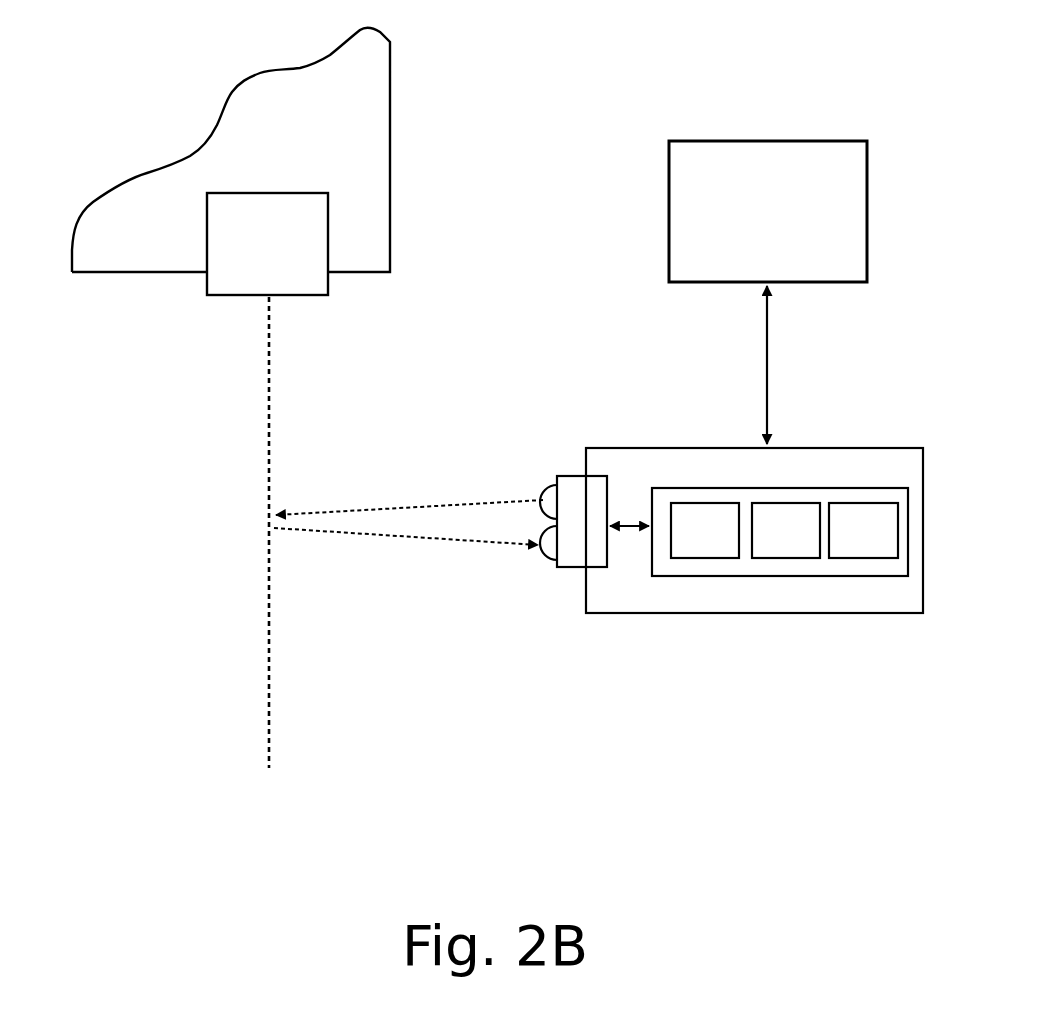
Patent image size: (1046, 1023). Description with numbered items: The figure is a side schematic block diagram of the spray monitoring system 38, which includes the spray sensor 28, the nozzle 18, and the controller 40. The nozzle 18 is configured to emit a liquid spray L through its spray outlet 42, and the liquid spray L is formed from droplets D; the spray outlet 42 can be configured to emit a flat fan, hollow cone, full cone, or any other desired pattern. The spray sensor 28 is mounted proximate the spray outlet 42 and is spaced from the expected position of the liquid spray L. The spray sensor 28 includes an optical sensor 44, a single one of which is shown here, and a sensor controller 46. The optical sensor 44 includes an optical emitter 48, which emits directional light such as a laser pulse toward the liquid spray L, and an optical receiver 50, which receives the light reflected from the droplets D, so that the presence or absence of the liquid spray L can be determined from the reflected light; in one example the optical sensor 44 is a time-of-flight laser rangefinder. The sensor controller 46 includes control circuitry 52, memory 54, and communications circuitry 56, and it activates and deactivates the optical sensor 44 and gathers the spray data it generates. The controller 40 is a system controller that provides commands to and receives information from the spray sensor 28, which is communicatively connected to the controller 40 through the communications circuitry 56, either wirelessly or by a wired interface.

The nozzle 18 is at (390, 72).
The spray outlet 42 is at (283, 252).
The spray monitoring system 38 is at (555, 212).
The controller 40 is at (752, 207).
The spray sensor 28 is at (645, 620).
The optical sensor 44 is at (573, 470).
The sensor controller 46 is at (712, 484).
The optical emitter 48 is at (549, 493).
The optical receiver 50 is at (550, 552).
The control circuitry 52 is at (690, 541).
The memory 54 is at (771, 541).
The communications circuitry 56 is at (848, 541).
The liquid spray L is at (257, 668).
The droplets D is at (269, 480).